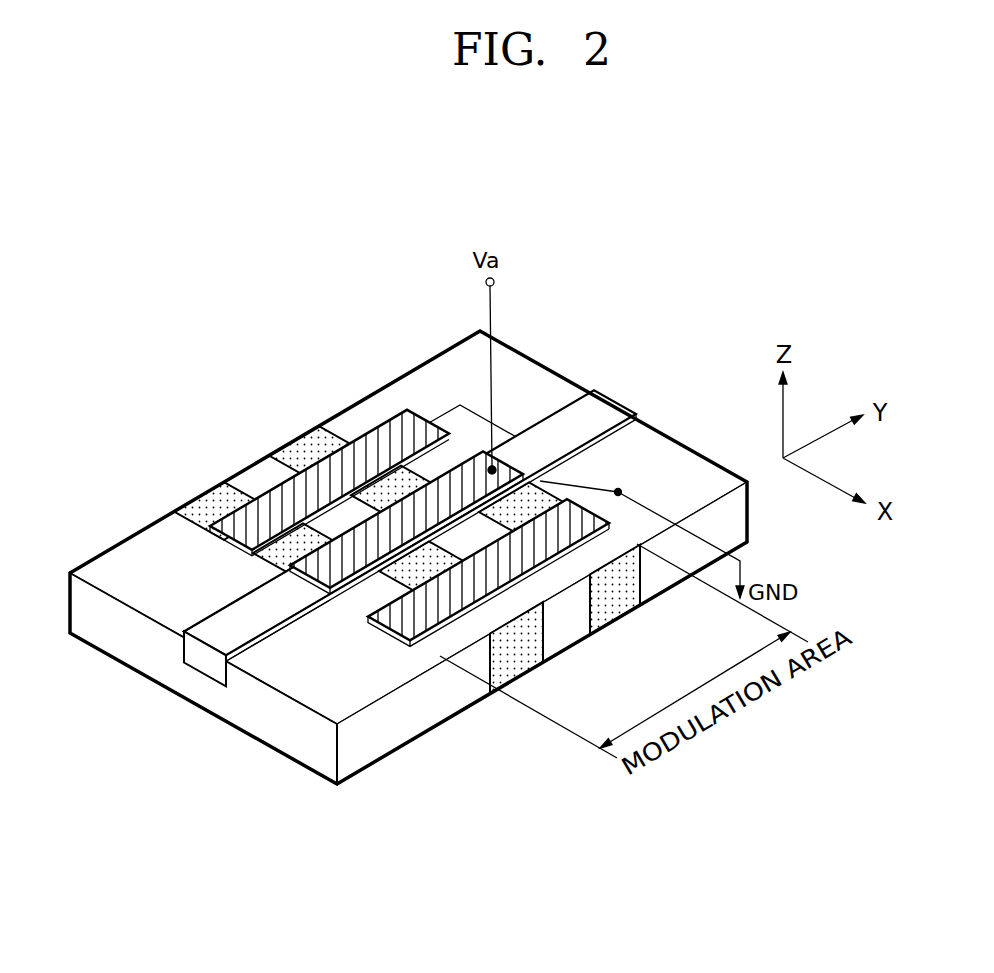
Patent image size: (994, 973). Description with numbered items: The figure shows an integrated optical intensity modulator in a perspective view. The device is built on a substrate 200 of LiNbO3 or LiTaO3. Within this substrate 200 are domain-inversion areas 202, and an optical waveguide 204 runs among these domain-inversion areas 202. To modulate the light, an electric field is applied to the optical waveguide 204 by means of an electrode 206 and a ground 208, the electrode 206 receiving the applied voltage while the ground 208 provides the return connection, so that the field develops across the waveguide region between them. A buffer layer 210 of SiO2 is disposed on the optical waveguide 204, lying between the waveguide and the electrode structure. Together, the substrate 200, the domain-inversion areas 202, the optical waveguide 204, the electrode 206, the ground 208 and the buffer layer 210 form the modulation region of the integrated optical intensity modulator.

The substrate 200 is at (260, 729).
The domain-inversion areas 202 is at (212, 503).
The optical waveguide 204 is at (203, 669).
The electrode 206 is at (514, 466).
The ground 208 is at (404, 415).
The buffer layer 210 is at (238, 613).